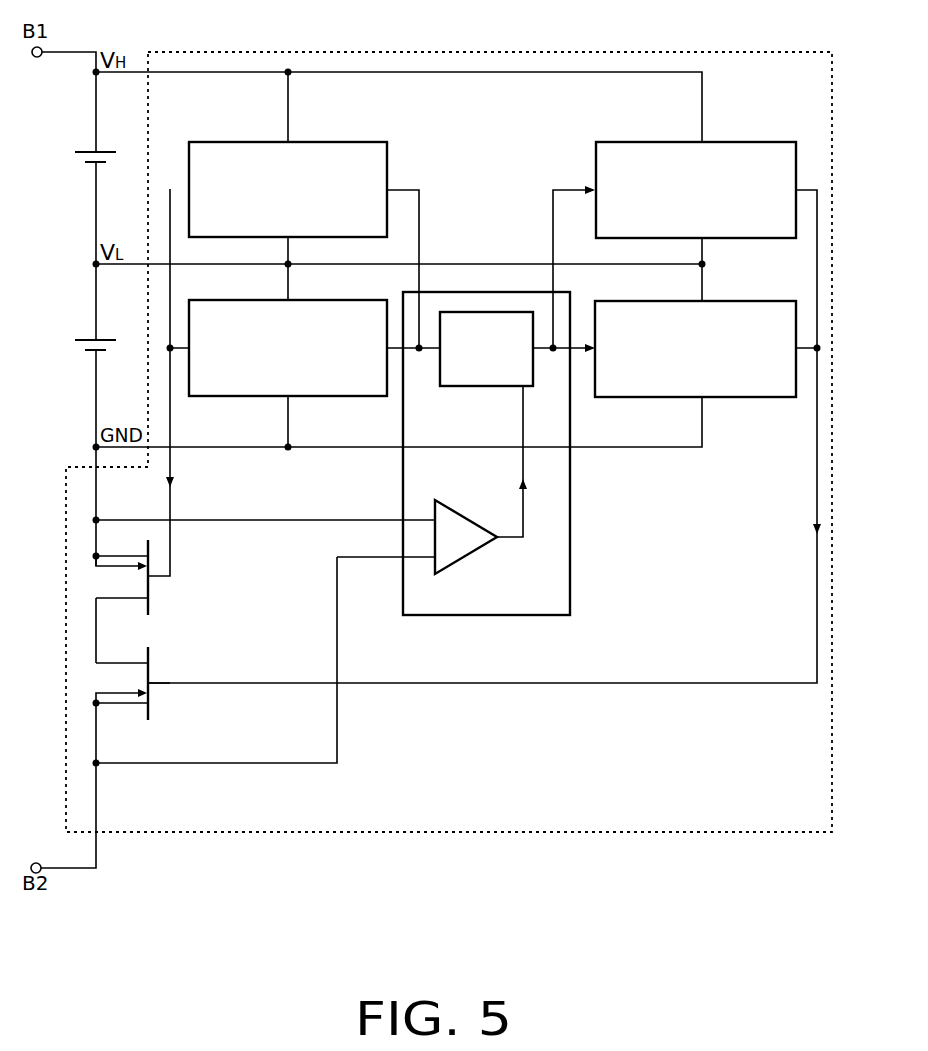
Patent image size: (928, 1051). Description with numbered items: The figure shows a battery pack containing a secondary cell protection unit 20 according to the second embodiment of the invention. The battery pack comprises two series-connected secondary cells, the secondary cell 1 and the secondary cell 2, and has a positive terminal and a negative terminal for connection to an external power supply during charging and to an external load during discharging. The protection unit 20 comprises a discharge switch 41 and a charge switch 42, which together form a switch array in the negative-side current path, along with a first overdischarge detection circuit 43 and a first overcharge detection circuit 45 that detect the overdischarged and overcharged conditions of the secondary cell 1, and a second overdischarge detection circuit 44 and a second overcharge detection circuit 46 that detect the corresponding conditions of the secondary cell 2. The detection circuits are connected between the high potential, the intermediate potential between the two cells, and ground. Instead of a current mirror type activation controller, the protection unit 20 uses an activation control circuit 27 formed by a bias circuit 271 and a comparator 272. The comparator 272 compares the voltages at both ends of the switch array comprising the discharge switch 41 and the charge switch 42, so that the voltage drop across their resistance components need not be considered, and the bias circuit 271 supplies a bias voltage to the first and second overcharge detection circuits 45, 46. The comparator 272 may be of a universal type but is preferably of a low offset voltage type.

The secondary cell 1 is at (93, 163).
The secondary cell 2 is at (93, 351).
The secondary cell protection unit 20 is at (557, 833).
The activation control circuit 27 is at (570, 582).
The discharge switch 41 is at (148, 588).
The charge switch 42 is at (148, 695).
The first overdischarge detection circuit 43 is at (358, 142).
The second overdischarge detection circuit 44 is at (318, 397).
The first overcharge detection circuit 45 is at (755, 142).
The second overcharge detection circuit 46 is at (748, 397).
The bias circuit 271 is at (492, 312).
The comparator 272 is at (468, 557).